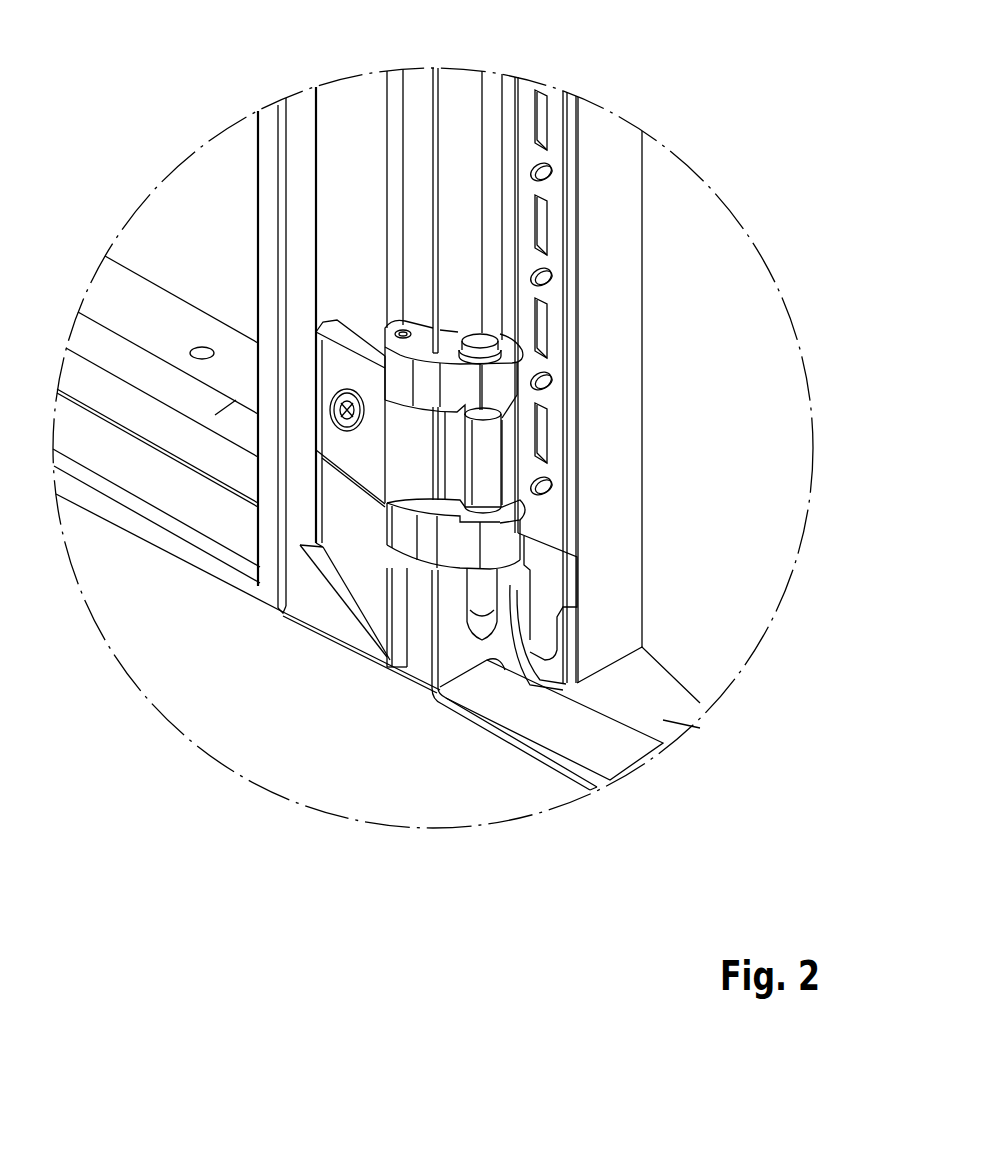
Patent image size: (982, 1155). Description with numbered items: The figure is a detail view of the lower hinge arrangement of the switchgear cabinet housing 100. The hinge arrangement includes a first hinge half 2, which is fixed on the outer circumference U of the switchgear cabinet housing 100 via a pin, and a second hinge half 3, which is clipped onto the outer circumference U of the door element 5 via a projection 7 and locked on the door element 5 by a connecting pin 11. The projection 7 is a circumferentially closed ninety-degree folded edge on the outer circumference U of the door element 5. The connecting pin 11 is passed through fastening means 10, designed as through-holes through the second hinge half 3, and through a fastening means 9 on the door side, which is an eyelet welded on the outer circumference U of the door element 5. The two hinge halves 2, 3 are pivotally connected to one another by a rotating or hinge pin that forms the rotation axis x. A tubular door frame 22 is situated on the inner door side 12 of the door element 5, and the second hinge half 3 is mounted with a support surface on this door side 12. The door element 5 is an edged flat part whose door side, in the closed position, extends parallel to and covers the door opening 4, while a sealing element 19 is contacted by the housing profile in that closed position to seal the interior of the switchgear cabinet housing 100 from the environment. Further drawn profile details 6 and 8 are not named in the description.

The switchgear cabinet housing 100 is at (230, 107).
The first hinge half 2 is at (360, 458).
The second hinge half 3 is at (463, 552).
The door opening 4 is at (125, 577).
The door element 5 is at (645, 767).
The upper hinge part 6 is at (520, 375).
The projection 7 is at (436, 72).
The profile rail 8 is at (452, 93).
The fastening means on the door side 9 is at (487, 450).
The fastening means 10 is at (505, 352).
The connecting pin 11 is at (482, 340).
The inner door side 12 is at (717, 272).
The sealing element 19 is at (700, 728).
The tubular door frame 22 is at (528, 97).
The rotation axis x is at (400, 330).
The outer circumference U is at (522, 757).